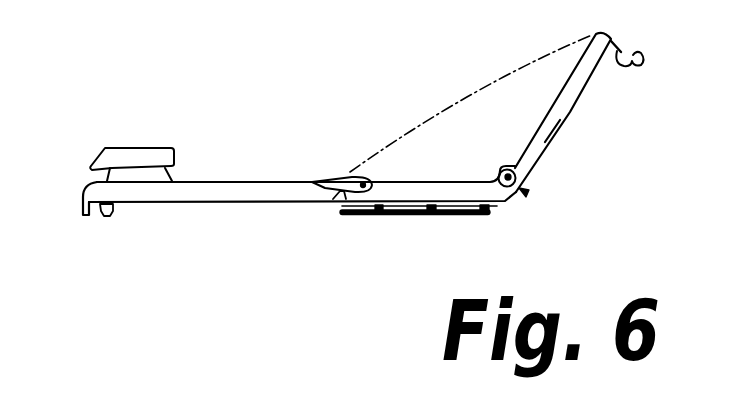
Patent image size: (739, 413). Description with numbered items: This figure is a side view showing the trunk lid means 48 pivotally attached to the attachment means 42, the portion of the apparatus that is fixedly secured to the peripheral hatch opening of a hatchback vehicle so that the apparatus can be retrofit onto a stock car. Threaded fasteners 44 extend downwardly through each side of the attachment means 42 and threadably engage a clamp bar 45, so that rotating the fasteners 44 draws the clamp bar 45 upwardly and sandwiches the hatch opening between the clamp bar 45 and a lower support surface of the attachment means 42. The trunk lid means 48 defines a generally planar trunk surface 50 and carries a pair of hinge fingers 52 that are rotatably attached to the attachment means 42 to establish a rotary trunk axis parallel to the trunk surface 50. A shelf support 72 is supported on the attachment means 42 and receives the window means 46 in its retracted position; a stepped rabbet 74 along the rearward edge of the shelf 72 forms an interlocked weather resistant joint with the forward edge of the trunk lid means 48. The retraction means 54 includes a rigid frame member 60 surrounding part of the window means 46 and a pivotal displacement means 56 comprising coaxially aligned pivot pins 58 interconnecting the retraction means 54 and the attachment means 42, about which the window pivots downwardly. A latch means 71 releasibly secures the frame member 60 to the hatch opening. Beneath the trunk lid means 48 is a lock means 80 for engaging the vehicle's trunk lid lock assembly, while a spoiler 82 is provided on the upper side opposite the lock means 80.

The attachment means 42 is at (462, 181).
The threaded fasteners 44 is at (380, 218).
The clamp bar 45 is at (484, 217).
The window means 46 is at (511, 70).
The trunk lid means 48 is at (272, 182).
The trunk surface 50 is at (210, 182).
The hinge fingers 52 is at (330, 178).
The retraction means 54 is at (571, 115).
The pivotal displacement means 56 is at (524, 191).
The pivot pins 58 is at (517, 177).
The frame member 60 is at (540, 139).
The latch means 71 is at (642, 67).
The shelf support 72 is at (413, 182).
The stepped rabbet 74 is at (332, 199).
The lock means 80 is at (103, 212).
The spoiler 82 is at (122, 157).